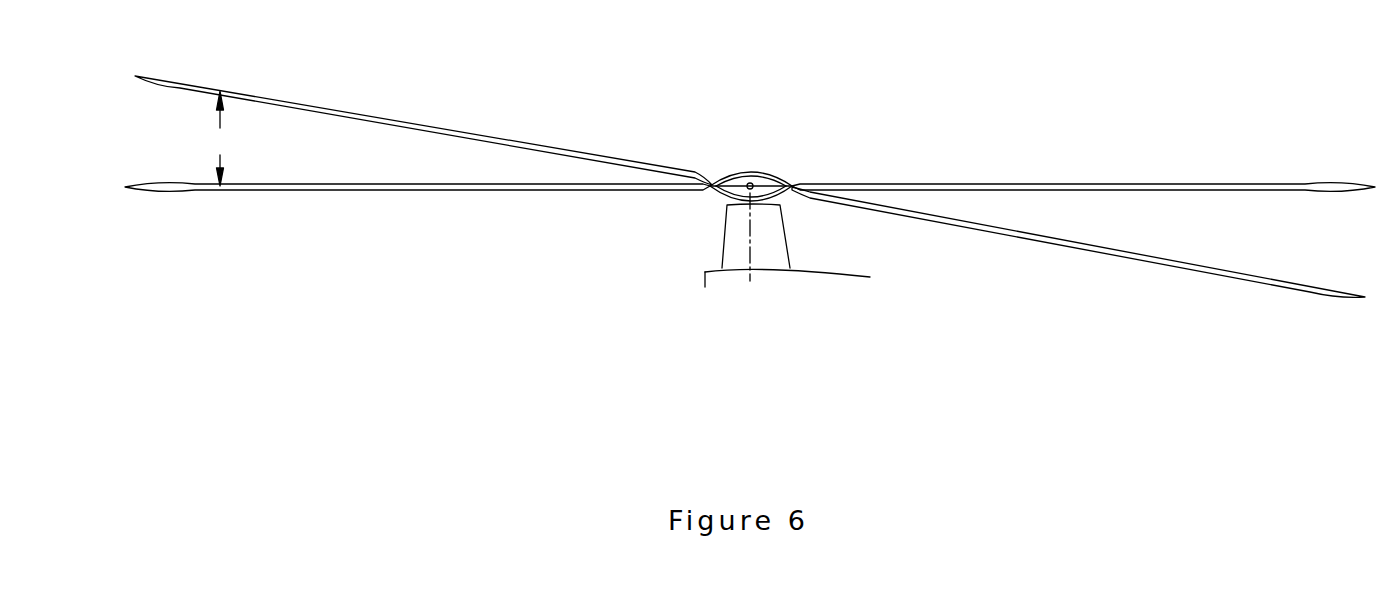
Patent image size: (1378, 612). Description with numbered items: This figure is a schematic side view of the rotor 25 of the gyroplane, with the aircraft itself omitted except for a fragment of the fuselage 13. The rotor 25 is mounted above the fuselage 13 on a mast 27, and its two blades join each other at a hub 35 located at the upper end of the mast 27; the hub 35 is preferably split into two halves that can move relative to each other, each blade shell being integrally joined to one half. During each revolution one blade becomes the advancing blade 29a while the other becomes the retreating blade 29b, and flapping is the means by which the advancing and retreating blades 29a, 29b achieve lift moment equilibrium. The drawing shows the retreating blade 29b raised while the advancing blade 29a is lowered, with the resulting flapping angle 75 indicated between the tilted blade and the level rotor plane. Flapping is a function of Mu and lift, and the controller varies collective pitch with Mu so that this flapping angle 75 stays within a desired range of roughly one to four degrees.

The fuselage 13 is at (705, 283).
The rotor 25 is at (727, 134).
The mast 27 is at (767, 233).
The advancing blade 29a is at (1135, 262).
The retreating blade 29b is at (437, 123).
The hub 35 is at (763, 174).
The flapping angle 75 is at (227, 138).